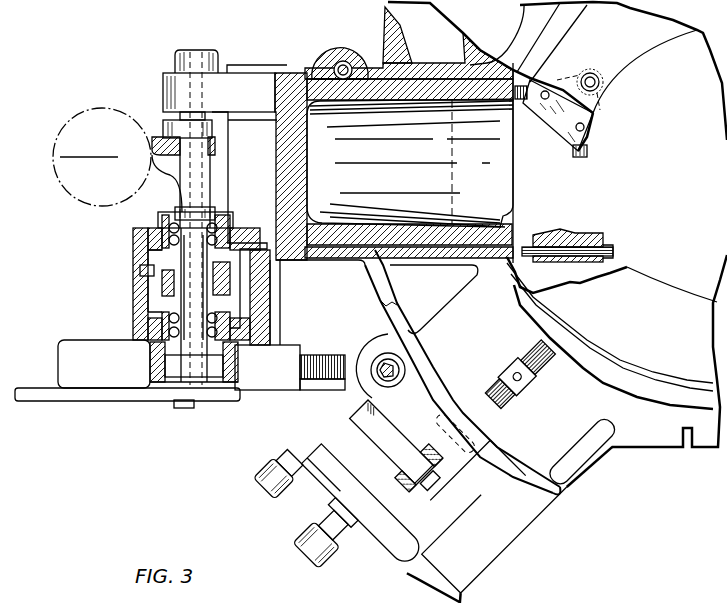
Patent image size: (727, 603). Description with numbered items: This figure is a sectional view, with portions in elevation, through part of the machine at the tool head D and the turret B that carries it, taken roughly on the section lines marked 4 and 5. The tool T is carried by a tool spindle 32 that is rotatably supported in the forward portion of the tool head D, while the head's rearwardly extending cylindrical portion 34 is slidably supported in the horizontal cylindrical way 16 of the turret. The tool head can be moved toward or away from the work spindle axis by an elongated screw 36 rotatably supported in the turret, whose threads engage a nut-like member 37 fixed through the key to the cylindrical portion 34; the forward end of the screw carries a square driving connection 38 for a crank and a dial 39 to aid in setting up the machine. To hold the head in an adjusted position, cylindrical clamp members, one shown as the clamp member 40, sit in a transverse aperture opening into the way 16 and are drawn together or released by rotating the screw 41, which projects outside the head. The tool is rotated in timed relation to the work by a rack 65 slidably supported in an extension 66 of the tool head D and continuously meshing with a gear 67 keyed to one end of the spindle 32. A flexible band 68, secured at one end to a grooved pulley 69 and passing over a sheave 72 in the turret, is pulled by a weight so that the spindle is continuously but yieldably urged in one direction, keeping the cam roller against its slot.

The section line 5- 5 is at (57, 158).
The section line 4- 4 is at (520, 165).
The tool T is at (300, 570).
The tool spindle 32 is at (133, 297).
The gear 67 is at (152, 368).
The extension 66 is at (67, 343).
The rack 65 is at (338, 353).
The grooved pulley 69 is at (220, 273).
The tool head D is at (285, 315).
The cylindrical portion 34 is at (507, 224).
The cylindrical way 16 is at (443, 256).
The clamp member 40 is at (362, 45).
The screw 41 is at (338, 63).
The housing B is at (387, 20).
The sheave 72 is at (583, 147).
The flexible band 68 is at (600, 252).
The nut-like member 37 is at (537, 378).
The elongated screw 36 is at (495, 405).
The square driving connection 38 is at (407, 477).
The dial 39 is at (432, 476).